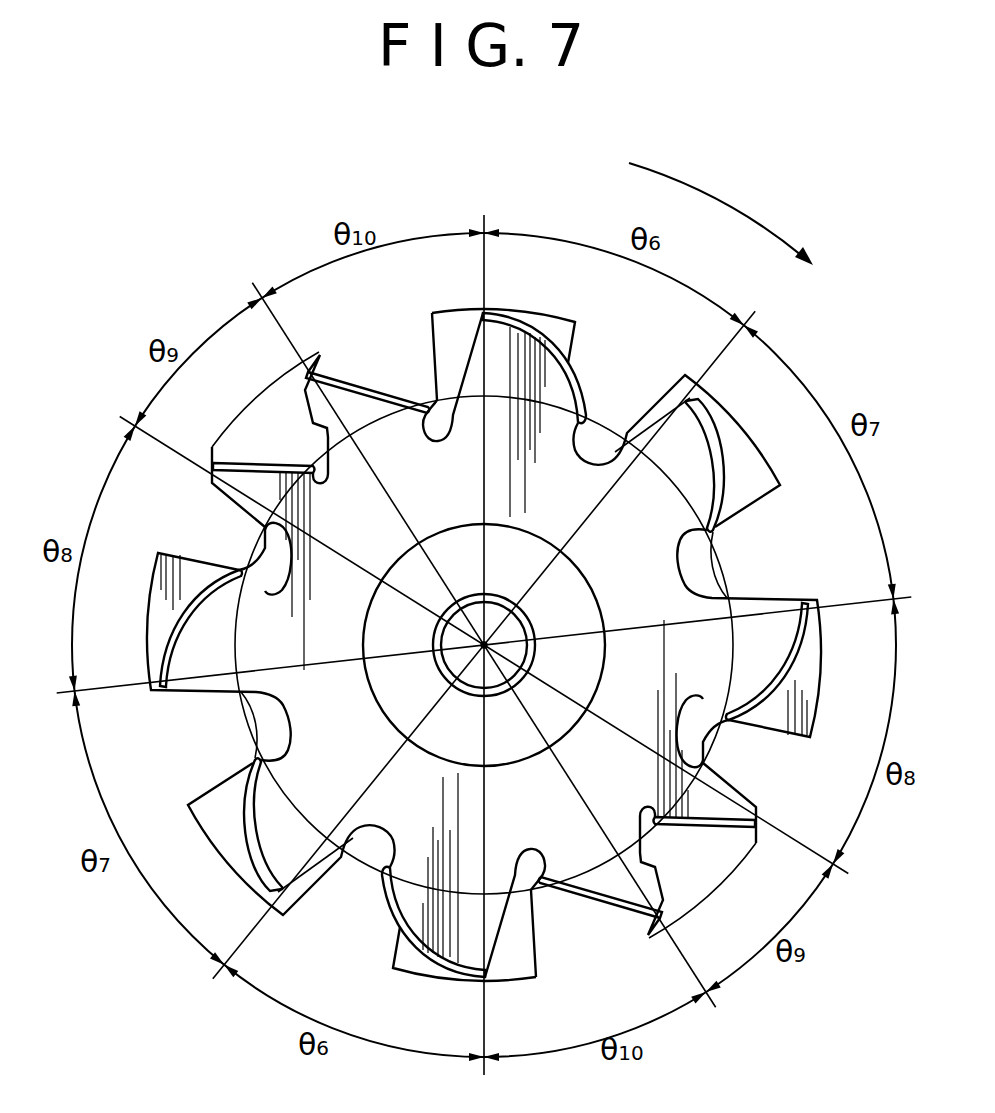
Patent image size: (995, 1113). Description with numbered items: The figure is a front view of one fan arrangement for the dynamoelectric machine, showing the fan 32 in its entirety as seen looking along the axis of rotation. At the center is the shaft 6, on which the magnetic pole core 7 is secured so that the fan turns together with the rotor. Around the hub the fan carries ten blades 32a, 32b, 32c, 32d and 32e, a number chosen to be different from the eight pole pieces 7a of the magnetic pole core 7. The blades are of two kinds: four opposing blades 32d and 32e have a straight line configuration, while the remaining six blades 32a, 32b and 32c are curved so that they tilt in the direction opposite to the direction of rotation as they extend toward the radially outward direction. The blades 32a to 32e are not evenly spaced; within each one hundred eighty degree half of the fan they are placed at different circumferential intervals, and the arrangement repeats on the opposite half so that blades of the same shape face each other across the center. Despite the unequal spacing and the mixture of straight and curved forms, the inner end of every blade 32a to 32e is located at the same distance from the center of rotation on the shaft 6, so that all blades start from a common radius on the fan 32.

The shaft 6 is at (510, 652).
The magnetic pole core 7 is at (537, 316).
The pole pieces 7a is at (466, 645).
The fan 32 is at (584, 446).
The curved blade 32a is at (558, 350).
The curved blade 32b is at (720, 472).
The curved blade 32c is at (793, 660).
The straight blade 32d is at (255, 460).
The straight blade 32e is at (372, 382).